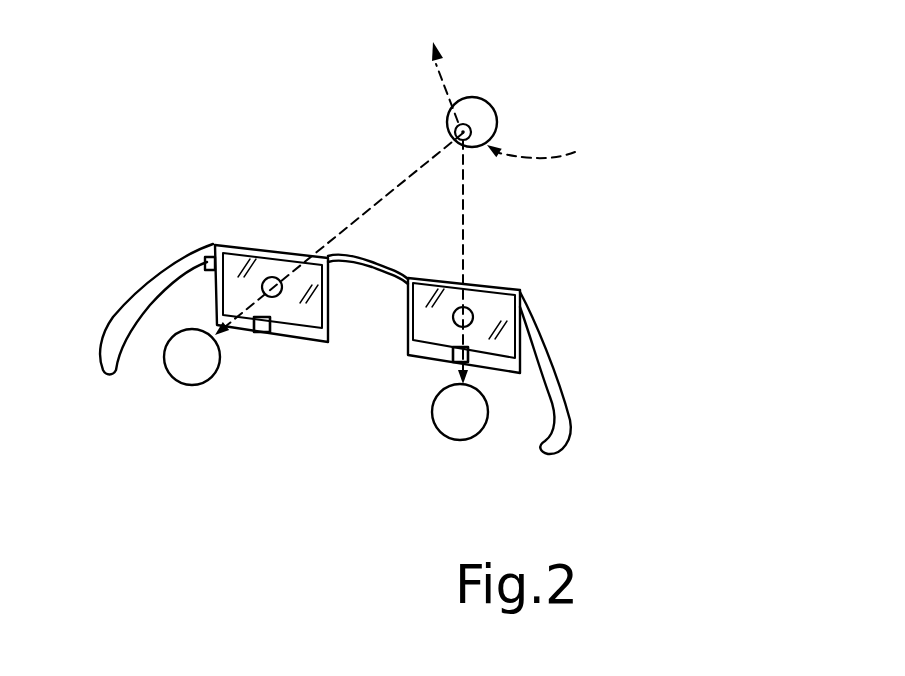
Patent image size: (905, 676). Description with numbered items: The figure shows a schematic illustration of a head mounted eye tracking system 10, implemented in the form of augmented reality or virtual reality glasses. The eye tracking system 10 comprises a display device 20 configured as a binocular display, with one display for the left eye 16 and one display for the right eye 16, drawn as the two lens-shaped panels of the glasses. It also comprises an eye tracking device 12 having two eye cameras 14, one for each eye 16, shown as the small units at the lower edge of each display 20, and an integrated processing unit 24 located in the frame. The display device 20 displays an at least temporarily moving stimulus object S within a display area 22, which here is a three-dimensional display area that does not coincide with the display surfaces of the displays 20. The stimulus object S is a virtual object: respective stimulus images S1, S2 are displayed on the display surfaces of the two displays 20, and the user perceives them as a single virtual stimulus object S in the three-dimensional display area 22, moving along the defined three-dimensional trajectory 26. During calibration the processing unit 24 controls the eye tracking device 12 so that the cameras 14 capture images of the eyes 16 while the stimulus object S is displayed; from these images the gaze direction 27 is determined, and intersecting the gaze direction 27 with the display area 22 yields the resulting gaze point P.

The eye tracking system 10 is at (328, 293).
The eye tracking device 12 is at (354, 387).
The eye camera 14 is at (455, 356).
The eye 16 is at (190, 370).
The display device 20 is at (223, 252).
The display area 22 is at (310, 101).
The processing unit 24 is at (203, 261).
The trajectory 26 is at (436, 78).
The gaze direction 27 is at (378, 204).
The stimulus object S is at (496, 111).
The gaze point P is at (468, 142).
The stimulus image S1 is at (273, 282).
The stimulus image S2 is at (450, 317).